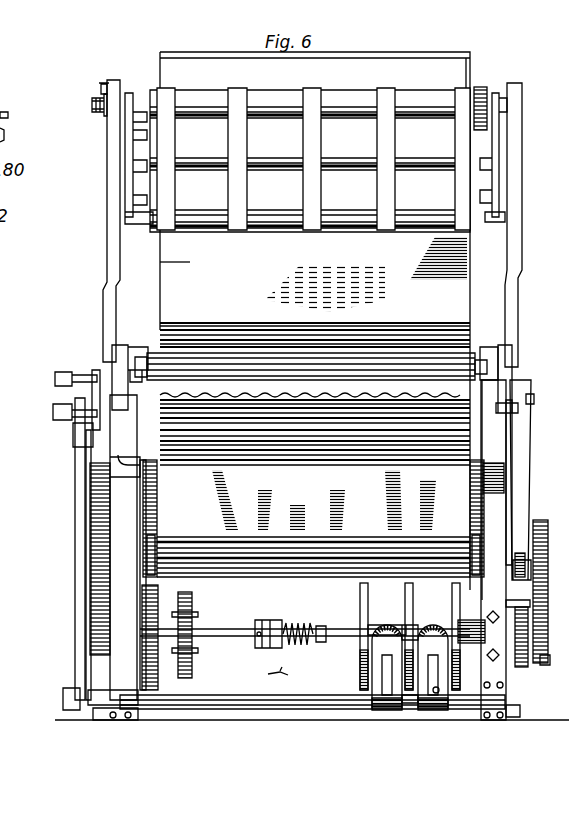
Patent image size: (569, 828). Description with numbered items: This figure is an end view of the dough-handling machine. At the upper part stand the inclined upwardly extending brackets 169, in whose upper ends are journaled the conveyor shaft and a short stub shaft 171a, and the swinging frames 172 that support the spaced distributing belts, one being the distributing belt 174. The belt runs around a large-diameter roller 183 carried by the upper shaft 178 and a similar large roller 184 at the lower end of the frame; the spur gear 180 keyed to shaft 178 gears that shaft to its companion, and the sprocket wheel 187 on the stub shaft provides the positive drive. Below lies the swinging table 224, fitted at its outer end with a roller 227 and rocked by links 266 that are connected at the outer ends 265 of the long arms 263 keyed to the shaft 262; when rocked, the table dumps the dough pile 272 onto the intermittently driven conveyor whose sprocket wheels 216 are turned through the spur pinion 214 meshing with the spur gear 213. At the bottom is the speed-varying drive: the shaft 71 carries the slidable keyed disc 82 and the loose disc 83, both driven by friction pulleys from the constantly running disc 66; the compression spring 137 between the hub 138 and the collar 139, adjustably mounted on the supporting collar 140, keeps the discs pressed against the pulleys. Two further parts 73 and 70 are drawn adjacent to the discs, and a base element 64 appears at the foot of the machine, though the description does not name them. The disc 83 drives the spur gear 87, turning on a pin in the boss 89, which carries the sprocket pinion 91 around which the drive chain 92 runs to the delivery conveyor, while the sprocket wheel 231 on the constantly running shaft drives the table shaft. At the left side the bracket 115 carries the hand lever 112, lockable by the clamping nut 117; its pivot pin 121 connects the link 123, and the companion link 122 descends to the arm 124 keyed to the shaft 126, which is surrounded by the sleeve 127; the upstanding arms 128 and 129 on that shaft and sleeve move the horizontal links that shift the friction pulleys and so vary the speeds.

The roller 183 is at (271, 100).
The distributing belt 174 is at (236, 190).
The sprocket wheel 187 is at (102, 84).
The pivot pin 121 is at (92, 104).
The stub shaft 171a is at (17, 106).
The shaft 178 is at (4, 140).
The inclined bracket 169 is at (107, 235).
The swinging frame 172 is at (133, 176).
The spur gear 180 is at (483, 87).
The roller 184 is at (262, 232).
The roller 227 is at (311, 360).
The link 266 is at (112, 363).
The swinging table 224 is at (486, 349).
The outer end of long arm 265 is at (534, 405).
The long arm 263 is at (530, 438).
The shaft 262 is at (532, 486).
The pile 272 is at (254, 437).
The sprocket wheel 216 is at (157, 522).
The shaft 71 is at (213, 629).
The sprocket wheel 231 is at (191, 653).
The supporting collar 140 is at (258, 620).
The compression spring 137 is at (300, 622).
The collar 139 is at (276, 663).
The hub 138 is at (323, 642).
The disc 82 is at (360, 600).
The disc 66 is at (405, 600).
The disc 83 is at (452, 600).
The cam 73 is at (393, 662).
The cam 70 is at (433, 662).
The upstanding arm 129 is at (385, 712).
The shaft 126 is at (410, 703).
The upstanding arm 128 is at (440, 700).
The spur gear 87 is at (500, 672).
The boss 89 is at (490, 615).
The drive chain 92 is at (548, 604).
The sprocket pinion 91 is at (545, 662).
The sleeve 127 is at (252, 709).
The base block 64 is at (153, 712).
The bracket 115 is at (75, 446).
The link 123 is at (86, 462).
The link 122 is at (75, 490).
The spur pinion 214 is at (90, 520).
The spur gear 213 is at (90, 550).
The hand lever 112 is at (93, 370).
The clamping nut 117 is at (85, 405).
The arm 124 is at (64, 694).